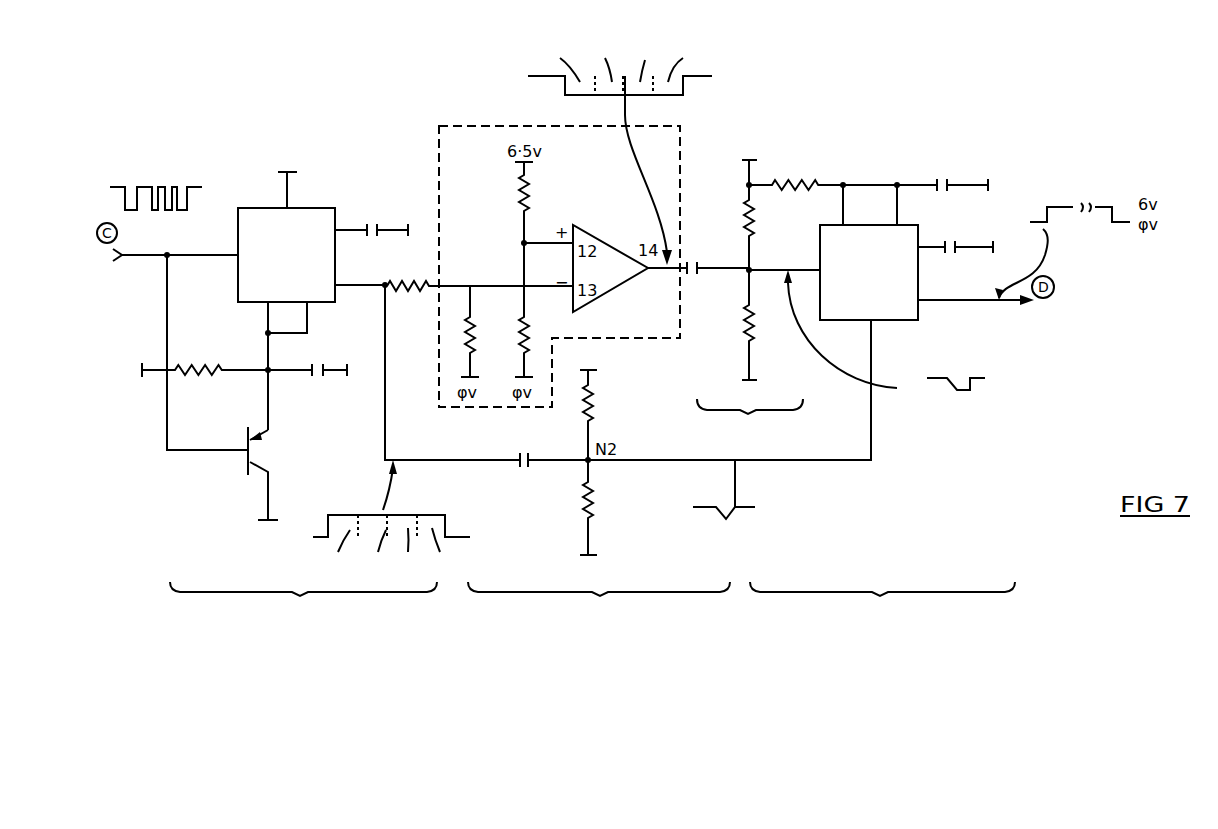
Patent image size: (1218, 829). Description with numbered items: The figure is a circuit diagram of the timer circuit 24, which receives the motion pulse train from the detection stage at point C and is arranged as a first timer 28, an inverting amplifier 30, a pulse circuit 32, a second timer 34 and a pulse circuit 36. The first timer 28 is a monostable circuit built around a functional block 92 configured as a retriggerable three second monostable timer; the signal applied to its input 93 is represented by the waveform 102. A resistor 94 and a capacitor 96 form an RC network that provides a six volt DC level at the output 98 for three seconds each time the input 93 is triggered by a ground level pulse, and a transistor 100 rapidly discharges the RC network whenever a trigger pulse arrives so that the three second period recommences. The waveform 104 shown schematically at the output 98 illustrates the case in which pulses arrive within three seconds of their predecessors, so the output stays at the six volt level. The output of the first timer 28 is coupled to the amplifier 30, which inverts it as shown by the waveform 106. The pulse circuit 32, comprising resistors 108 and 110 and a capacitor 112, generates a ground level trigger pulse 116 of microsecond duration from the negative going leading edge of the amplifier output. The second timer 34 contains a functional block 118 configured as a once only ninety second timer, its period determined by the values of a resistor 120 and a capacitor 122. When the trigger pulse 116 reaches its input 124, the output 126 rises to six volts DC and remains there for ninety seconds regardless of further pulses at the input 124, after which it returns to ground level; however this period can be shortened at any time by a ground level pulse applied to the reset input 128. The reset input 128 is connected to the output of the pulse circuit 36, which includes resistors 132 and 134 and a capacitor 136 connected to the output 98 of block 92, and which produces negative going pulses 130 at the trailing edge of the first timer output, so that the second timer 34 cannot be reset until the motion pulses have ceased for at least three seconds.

The timer circuit 24 is at (212, 122).
The waveform 102 is at (148, 186).
The input 93 is at (193, 254).
The functional block 92 is at (318, 207).
The output 98 is at (348, 289).
The resistor 94 is at (215, 375).
The capacitor 96 is at (322, 375).
The transistor 100 is at (245, 460).
The waveform 104 is at (365, 513).
The waveform 106 is at (566, 96).
The inverting amplifier 30 is at (478, 116).
The capacitor 112 is at (700, 272).
The resistor 108 is at (743, 205).
The resistor 110 is at (742, 340).
The resistor 120 is at (820, 181).
The capacitor 122 is at (950, 182).
The functional block 118 is at (832, 322).
The input 124 is at (808, 266).
The trigger pulse 116 is at (985, 389).
The output 126 is at (938, 299).
The reset input 128 is at (872, 357).
The resistor 132 is at (605, 413).
The resistor 134 is at (605, 517).
The capacitor 136 is at (519, 456).
The negative going pulses 130 is at (693, 507).
The first timer 28 is at (170, 586).
The pulse circuit 36 is at (470, 590).
The second timer 34 is at (1015, 586).
The pulse circuit 32 is at (782, 413).